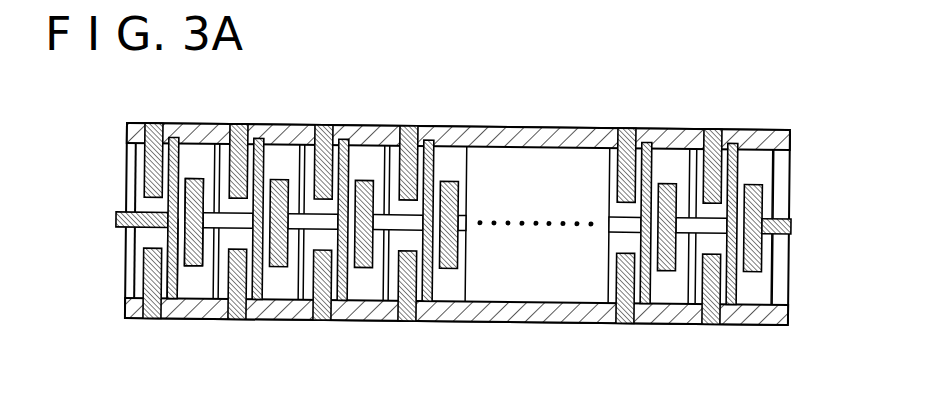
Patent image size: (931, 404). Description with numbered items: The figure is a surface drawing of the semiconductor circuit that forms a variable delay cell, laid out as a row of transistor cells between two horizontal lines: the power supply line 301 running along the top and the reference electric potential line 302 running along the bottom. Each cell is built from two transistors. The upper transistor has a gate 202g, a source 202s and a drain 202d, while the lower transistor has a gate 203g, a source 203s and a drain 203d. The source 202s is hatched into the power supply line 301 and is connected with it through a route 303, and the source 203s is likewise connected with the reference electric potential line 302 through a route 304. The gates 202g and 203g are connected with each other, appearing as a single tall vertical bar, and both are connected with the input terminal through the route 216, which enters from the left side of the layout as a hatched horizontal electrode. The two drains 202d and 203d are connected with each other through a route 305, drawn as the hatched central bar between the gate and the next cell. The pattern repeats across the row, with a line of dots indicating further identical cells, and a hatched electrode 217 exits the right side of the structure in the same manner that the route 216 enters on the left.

The power supply line 301 is at (127, 133).
The reference electric potential line 302 is at (127, 305).
The route 303 is at (140, 163).
The route 304 is at (145, 281).
The route 305 is at (195, 177).
The source 202s is at (147, 203).
The gate 202g is at (186, 147).
The drain 202d is at (208, 168).
The source 203s is at (148, 243).
The gate 203g is at (182, 288).
The drain 203d is at (212, 288).
The route 216 is at (117, 222).
The output terminal 217 is at (810, 188).